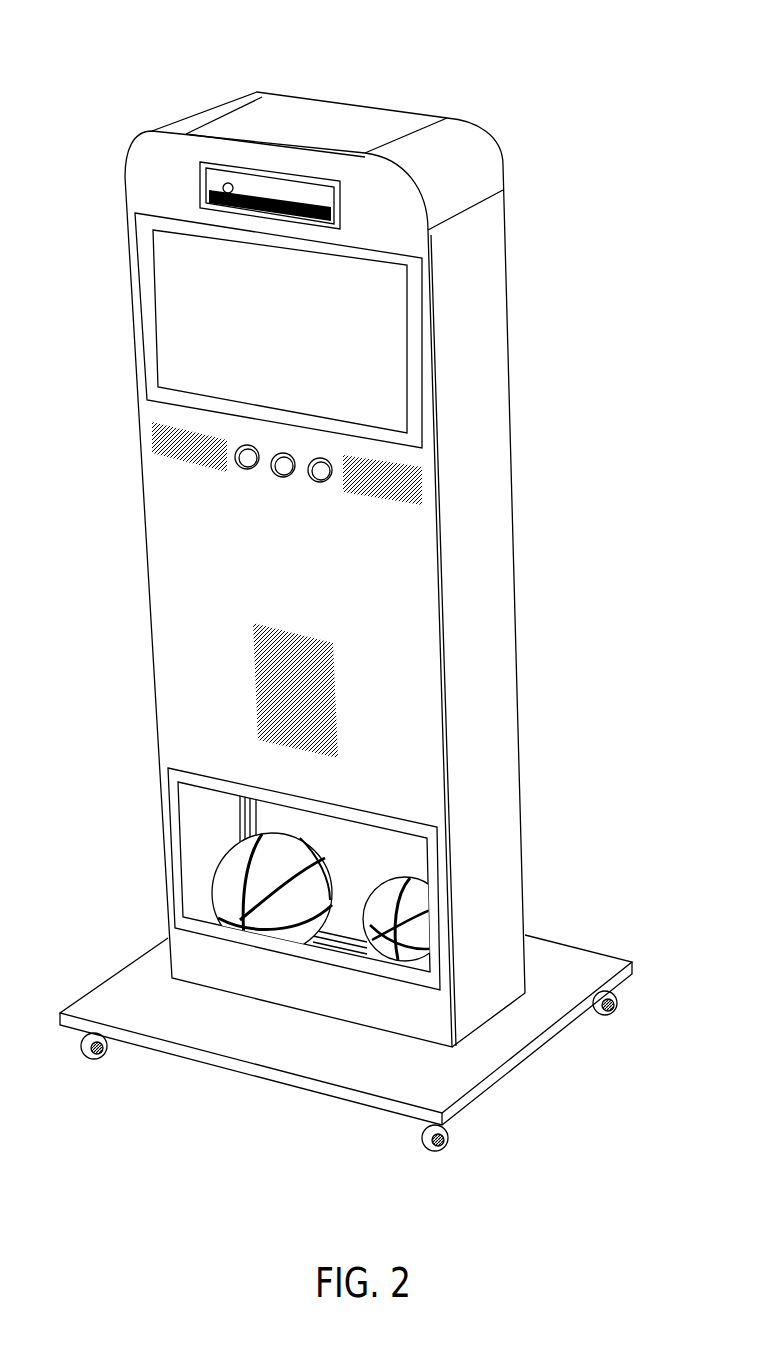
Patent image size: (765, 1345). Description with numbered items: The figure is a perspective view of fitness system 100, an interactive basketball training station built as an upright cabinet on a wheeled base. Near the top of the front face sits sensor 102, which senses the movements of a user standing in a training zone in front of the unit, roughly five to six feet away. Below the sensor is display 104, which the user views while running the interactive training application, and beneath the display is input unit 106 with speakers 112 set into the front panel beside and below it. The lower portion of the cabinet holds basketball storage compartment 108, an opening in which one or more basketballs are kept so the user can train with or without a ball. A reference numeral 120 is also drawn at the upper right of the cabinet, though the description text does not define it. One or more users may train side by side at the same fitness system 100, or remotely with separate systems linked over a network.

The fitness system 100 is at (436, 78).
The sensor 102 is at (296, 185).
The display 104 is at (387, 338).
The input unit 106 is at (316, 498).
The basketball storage compartment 108 is at (430, 893).
The speakers 112 is at (412, 480).
The housing 120 is at (457, 177).